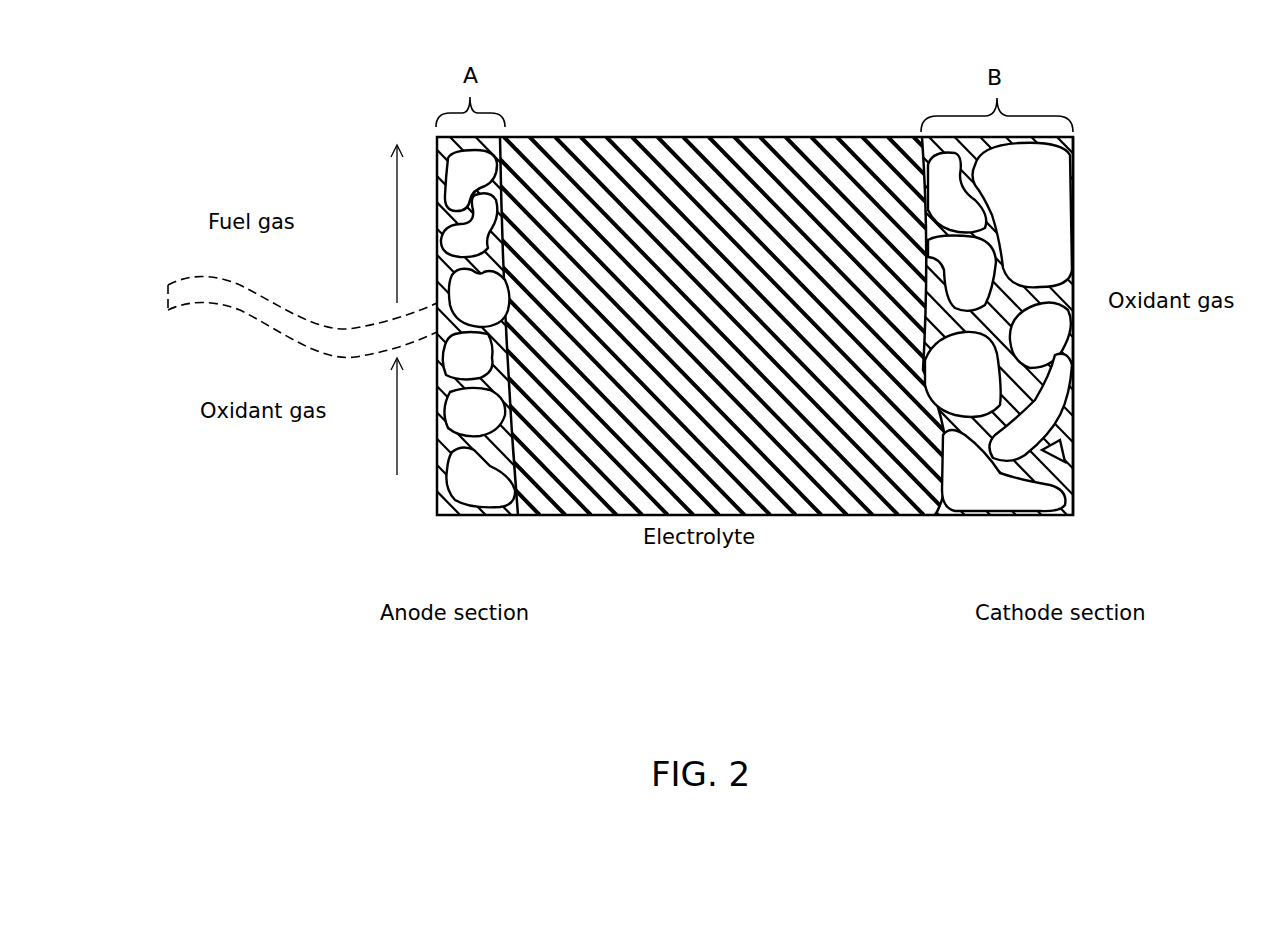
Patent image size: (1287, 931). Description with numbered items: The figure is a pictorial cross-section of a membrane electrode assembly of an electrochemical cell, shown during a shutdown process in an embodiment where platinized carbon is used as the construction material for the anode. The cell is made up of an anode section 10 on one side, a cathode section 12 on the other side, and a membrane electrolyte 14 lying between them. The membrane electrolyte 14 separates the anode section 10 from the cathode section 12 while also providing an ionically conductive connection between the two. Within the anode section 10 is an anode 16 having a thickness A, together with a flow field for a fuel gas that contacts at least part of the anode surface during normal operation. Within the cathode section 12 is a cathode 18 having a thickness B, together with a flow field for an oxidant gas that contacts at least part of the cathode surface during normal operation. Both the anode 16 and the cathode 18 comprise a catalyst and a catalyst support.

The anode section 10 is at (418, 492).
The cathode section 12 is at (1103, 490).
The membrane electrolyte 14 is at (620, 136).
The anode 16 is at (500, 517).
The cathode 18 is at (980, 517).